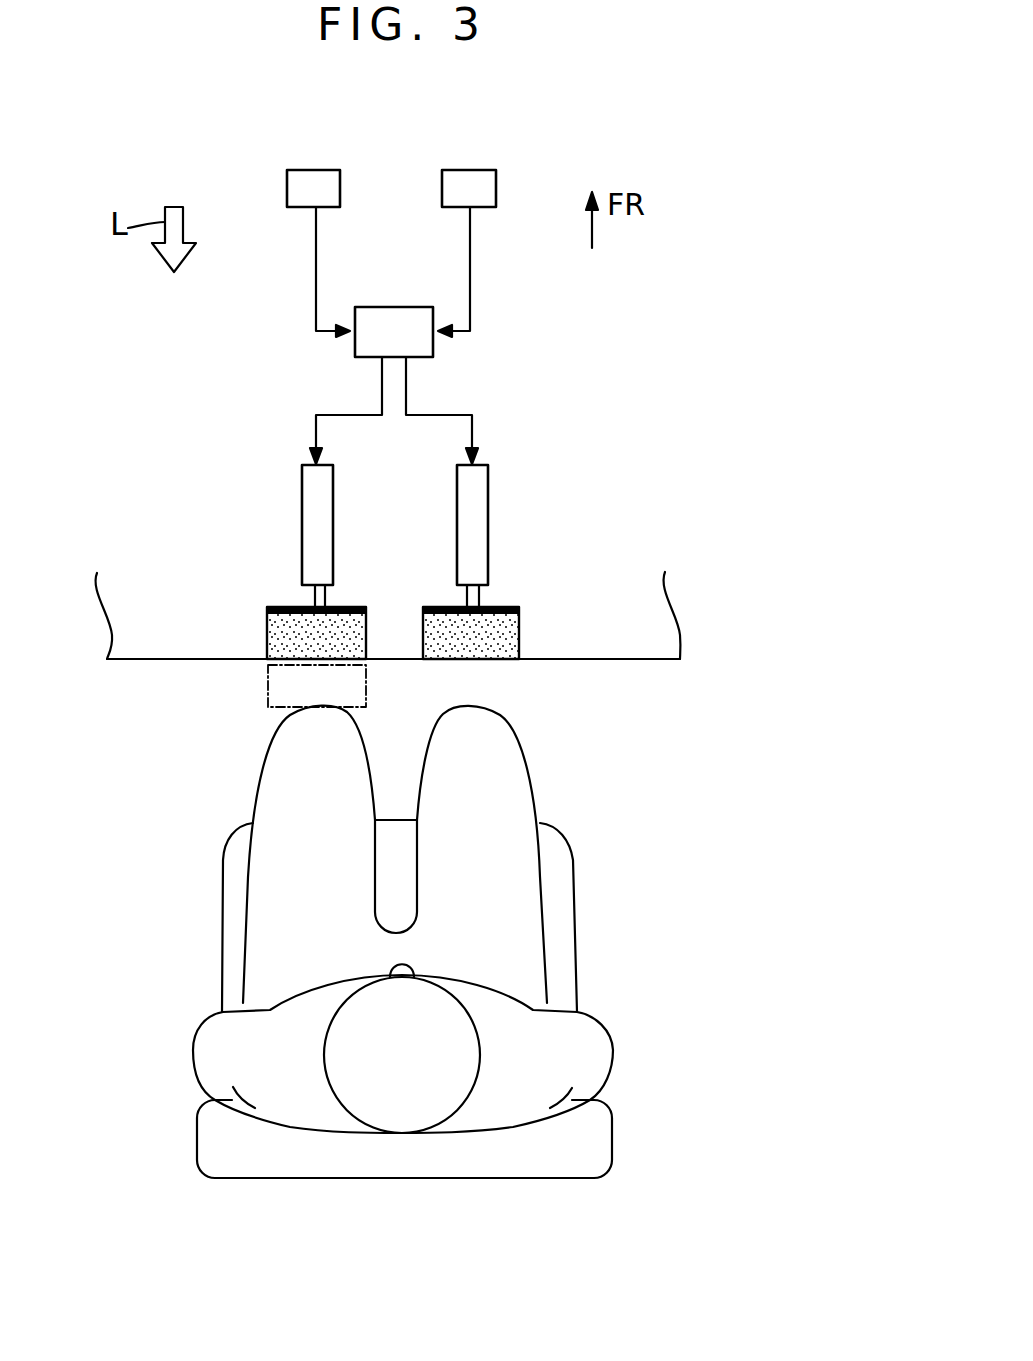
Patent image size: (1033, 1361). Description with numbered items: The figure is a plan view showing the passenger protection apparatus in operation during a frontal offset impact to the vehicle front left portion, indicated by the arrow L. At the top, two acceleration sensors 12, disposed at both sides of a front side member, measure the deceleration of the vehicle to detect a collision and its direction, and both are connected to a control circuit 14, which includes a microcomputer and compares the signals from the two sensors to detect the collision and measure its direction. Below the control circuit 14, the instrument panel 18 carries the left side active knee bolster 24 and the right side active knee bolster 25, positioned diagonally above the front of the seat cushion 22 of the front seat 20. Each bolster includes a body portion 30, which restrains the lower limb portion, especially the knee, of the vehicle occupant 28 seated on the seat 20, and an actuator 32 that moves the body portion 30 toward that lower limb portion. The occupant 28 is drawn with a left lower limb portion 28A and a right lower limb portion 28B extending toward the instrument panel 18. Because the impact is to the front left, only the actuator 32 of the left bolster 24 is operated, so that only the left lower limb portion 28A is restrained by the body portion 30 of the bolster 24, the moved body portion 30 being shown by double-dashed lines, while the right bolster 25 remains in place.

The acceleration sensors 12 is at (442, 180).
The control circuit 14 is at (405, 307).
The instrument panel 18 is at (640, 660).
The front seat 20 is at (308, 1181).
The seat cushion 22 is at (567, 946).
The left side active knee bolster 24 is at (222, 468).
The right side active knee bolster 25 is at (575, 468).
The vehicle occupant 28 is at (398, 971).
The left lower limb portion 28A is at (306, 730).
The right lower limb portion 28B is at (482, 733).
The body portion 30 is at (268, 683).
The actuator 32 is at (302, 483).